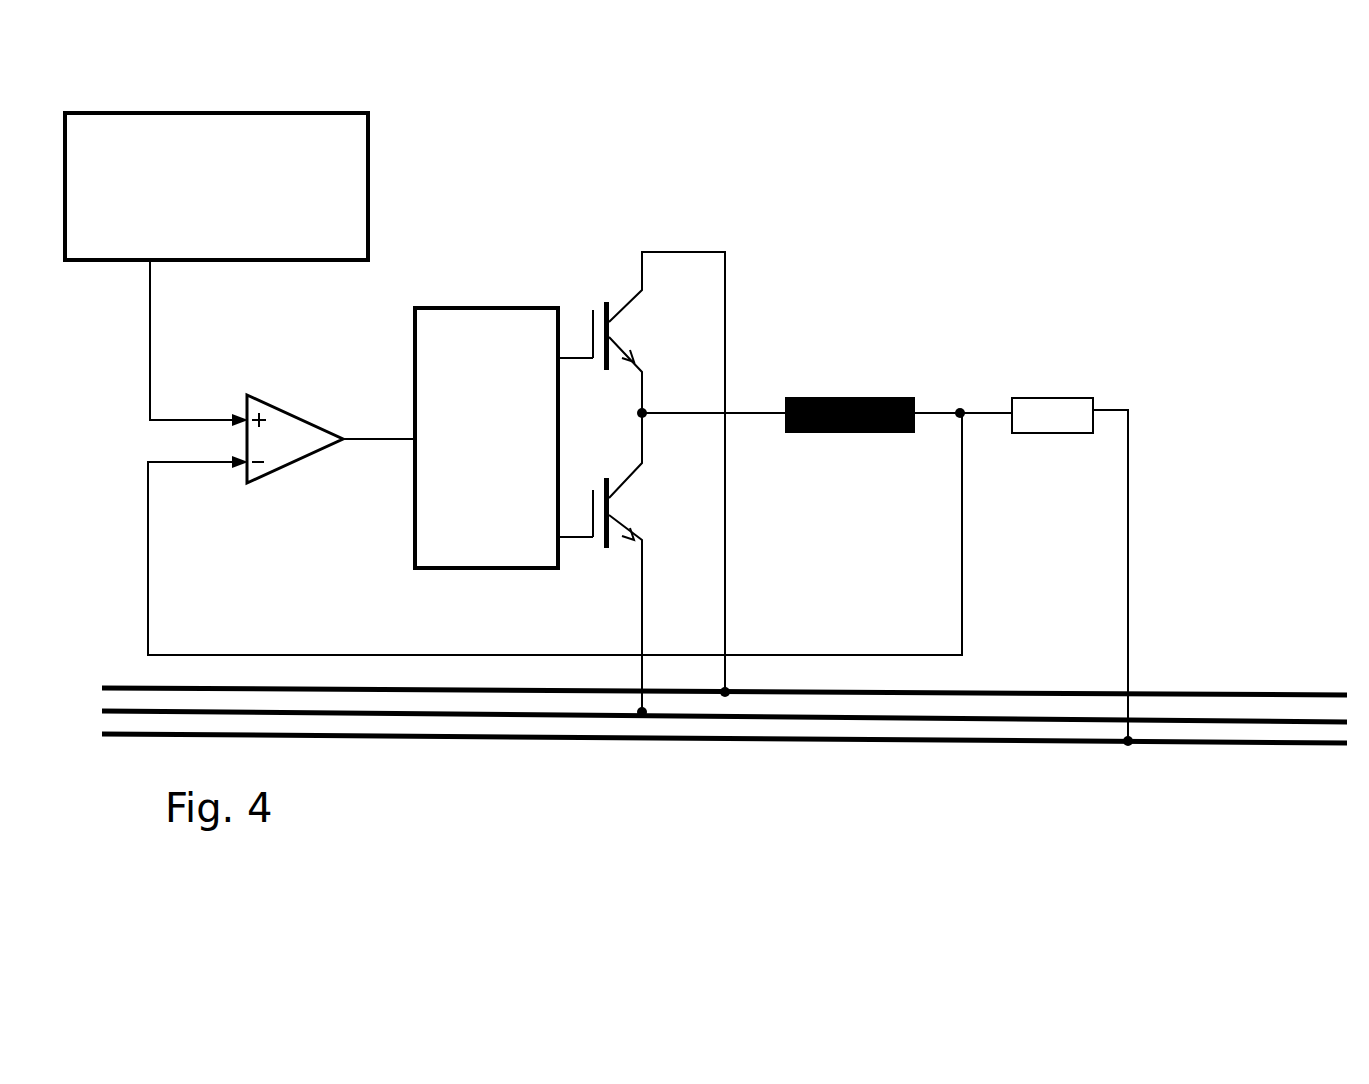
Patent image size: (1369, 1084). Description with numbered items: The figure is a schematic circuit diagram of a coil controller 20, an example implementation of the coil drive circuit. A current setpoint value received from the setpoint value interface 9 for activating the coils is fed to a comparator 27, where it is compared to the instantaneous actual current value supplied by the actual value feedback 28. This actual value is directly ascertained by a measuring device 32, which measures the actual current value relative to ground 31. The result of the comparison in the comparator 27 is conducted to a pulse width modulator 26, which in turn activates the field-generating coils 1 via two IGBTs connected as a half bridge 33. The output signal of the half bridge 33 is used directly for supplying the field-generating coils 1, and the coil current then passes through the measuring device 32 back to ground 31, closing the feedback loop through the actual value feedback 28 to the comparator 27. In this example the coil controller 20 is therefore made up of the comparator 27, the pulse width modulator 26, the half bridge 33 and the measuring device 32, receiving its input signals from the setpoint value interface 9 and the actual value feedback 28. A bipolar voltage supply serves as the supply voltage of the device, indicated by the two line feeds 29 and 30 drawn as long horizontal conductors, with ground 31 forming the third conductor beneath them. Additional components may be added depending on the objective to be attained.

The field-generating coils 1 is at (855, 397).
The setpoint value interface 9 is at (216, 266).
The coil controller 20 is at (1058, 278).
The pulse width modulator 26 is at (486, 438).
The comparator 27 is at (303, 437).
The actual value feedback 28 is at (197, 475).
The line feed 29 is at (1215, 717).
The line feed 30 is at (1233, 695).
The ground 31 is at (1322, 748).
The measuring device 32 is at (1070, 420).
The half bridge 33 is at (606, 453).